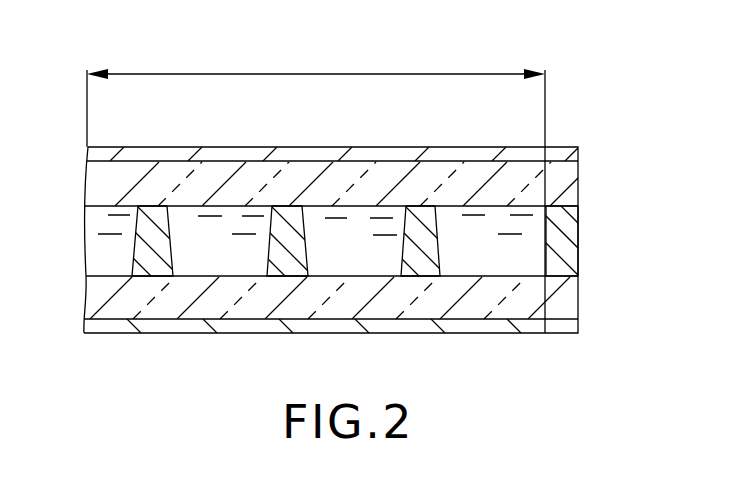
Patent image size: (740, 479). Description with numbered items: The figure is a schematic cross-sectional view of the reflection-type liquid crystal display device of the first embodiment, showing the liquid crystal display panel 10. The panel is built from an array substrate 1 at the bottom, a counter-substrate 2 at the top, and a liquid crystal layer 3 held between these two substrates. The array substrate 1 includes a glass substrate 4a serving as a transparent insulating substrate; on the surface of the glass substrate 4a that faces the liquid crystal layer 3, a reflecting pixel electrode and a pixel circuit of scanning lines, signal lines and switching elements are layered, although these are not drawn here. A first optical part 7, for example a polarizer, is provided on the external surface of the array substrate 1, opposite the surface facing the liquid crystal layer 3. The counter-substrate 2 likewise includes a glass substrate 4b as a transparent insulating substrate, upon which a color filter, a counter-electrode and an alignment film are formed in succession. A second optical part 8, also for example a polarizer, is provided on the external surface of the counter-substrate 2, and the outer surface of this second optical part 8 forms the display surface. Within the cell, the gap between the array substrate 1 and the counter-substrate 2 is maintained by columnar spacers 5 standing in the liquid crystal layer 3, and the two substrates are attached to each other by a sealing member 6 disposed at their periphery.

The array substrate 1 is at (292, 307).
The counter-substrate 2 is at (306, 167).
The liquid crystal layer 3 is at (88, 247).
The glass substrate 4a is at (85, 306).
The glass substrate 4b is at (82, 180).
The columnar spacers 5 is at (165, 213).
The sealing member 6 is at (580, 244).
The first optical part 7 is at (85, 326).
The second optical part 8 is at (88, 153).
The liquid crystal display panel 10 is at (609, 134).